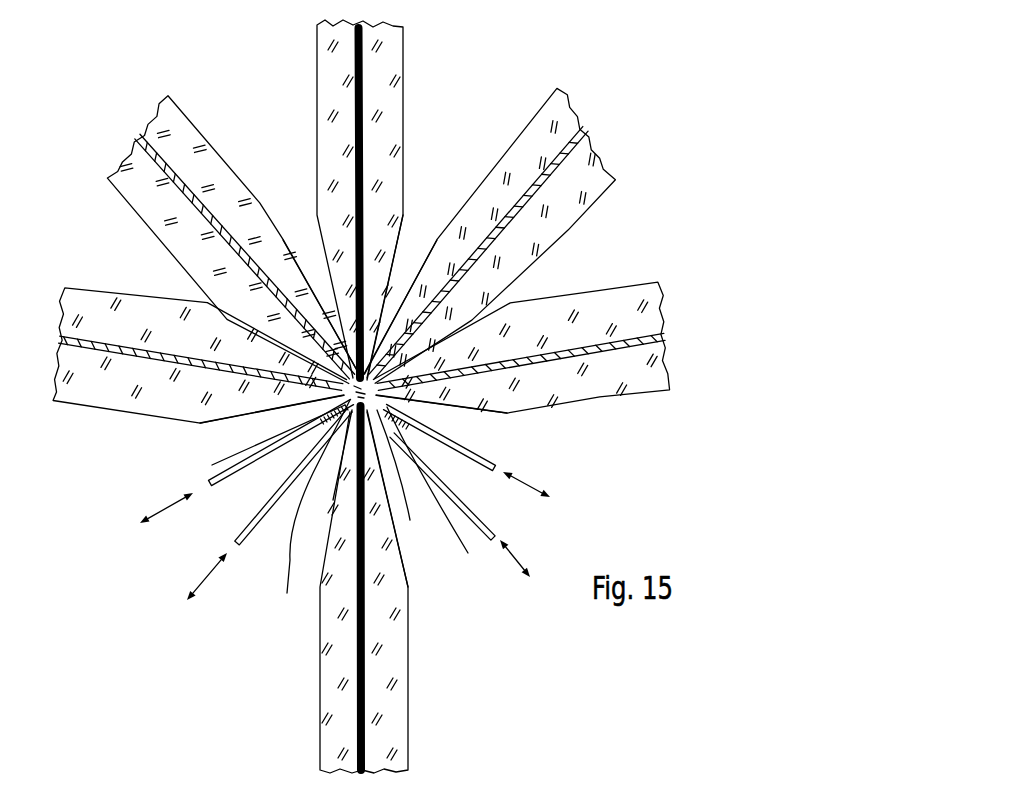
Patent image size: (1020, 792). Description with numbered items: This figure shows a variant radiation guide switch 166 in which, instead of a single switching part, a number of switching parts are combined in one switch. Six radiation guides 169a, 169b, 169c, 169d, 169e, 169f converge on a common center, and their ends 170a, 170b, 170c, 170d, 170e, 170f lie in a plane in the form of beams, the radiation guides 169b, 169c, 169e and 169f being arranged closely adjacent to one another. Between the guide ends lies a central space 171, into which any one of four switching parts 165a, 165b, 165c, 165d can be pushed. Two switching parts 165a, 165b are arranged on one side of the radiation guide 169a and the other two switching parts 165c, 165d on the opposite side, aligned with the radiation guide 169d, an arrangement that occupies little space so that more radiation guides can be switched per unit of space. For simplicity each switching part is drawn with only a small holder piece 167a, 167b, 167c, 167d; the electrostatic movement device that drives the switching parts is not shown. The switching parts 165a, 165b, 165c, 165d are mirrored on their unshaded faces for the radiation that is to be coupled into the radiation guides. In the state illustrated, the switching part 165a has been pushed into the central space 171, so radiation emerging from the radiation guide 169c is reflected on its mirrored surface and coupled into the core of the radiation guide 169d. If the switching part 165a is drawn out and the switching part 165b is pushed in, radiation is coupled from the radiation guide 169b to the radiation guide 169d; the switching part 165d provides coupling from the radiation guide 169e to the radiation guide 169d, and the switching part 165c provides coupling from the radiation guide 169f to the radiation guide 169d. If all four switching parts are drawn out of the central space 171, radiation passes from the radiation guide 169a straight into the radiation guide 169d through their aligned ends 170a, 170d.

The switching part 165a is at (412, 483).
The switching part 165b is at (442, 498).
The switching part 165c is at (300, 513).
The switching part 165d is at (247, 451).
The radiation guide switch 166 is at (543, 613).
The tab 167a is at (493, 444).
The tab 167b is at (490, 509).
The tab 167c is at (248, 535).
The tab 167d is at (220, 480).
The radiation guide 169a is at (420, 694).
The radiation guide 169b is at (617, 412).
The radiation guide 169c is at (600, 252).
The radiation guide 169d is at (414, 48).
The radiation guide 169e is at (217, 138).
The radiation guide 169f is at (128, 283).
The end of radiation guide 170a is at (411, 562).
The end of radiation guide 170b is at (508, 421).
The end of radiation guide 170c is at (426, 246).
The end of radiation guide 170d is at (404, 255).
The end of radiation guide 170e is at (298, 250).
The end of radiation guide 170f is at (233, 427).
The central space 171 is at (327, 475).